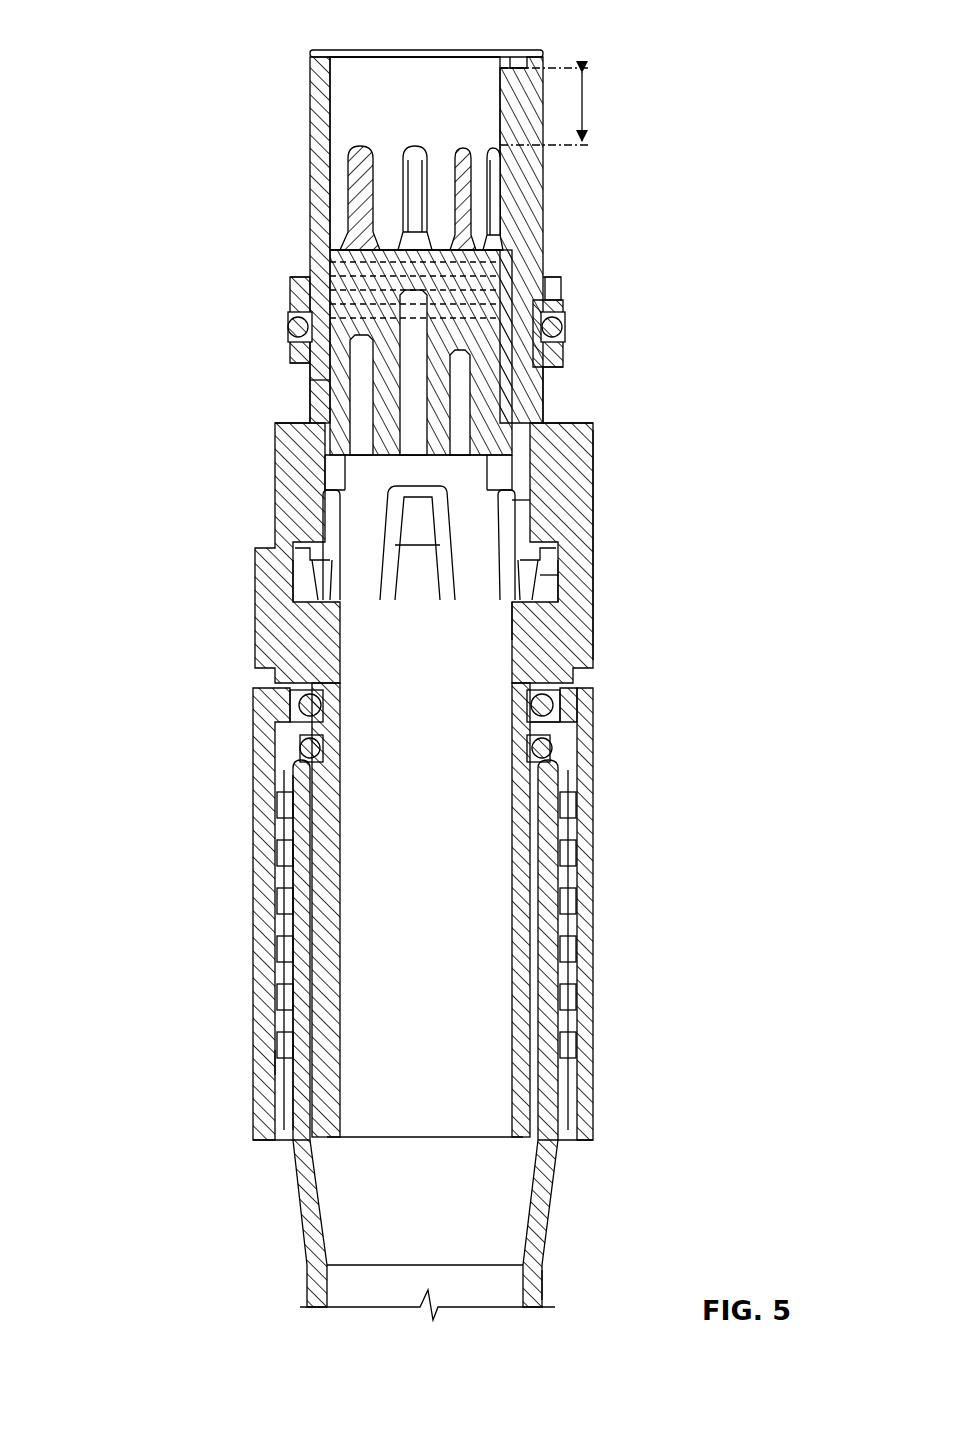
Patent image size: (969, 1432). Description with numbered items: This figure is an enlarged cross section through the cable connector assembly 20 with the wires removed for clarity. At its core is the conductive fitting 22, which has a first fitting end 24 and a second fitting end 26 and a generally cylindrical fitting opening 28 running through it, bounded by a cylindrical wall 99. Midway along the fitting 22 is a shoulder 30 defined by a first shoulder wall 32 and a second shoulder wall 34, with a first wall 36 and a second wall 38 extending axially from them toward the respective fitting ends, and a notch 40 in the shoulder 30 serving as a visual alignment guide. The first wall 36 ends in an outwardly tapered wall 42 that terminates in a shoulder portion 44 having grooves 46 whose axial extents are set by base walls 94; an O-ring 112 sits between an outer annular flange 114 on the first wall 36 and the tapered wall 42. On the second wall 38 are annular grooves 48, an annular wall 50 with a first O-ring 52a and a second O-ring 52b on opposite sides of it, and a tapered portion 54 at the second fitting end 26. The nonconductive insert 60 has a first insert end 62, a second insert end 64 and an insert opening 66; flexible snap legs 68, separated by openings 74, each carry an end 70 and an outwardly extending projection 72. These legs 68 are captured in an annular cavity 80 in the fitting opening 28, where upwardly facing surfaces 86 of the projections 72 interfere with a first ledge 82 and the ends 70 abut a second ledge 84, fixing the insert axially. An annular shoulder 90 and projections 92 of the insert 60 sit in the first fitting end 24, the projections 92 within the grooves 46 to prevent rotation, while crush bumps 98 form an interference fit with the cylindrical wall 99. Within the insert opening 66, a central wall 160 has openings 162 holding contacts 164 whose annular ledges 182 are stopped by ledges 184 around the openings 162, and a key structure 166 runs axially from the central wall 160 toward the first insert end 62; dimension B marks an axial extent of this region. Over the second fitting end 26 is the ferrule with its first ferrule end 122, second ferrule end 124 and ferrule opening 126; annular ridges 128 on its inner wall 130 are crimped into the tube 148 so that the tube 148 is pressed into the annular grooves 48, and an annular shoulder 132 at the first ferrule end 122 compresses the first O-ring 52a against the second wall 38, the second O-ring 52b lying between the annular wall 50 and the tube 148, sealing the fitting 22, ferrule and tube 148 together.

The cable connector assembly 20 is at (113, 38).
The fitting 22 is at (593, 475).
The first fitting end 24 is at (300, 362).
The second fitting end 26 is at (548, 1190).
The fitting opening 28 is at (408, 1077).
The shoulder 30 is at (593, 445).
The first shoulder wall 32 is at (575, 423).
The second shoulder wall 34 is at (318, 692).
The first wall 36 is at (545, 410).
The second wall 38 is at (300, 765).
The notch 40 is at (275, 430).
The outwardly tapered wall 42 is at (290, 327).
The shoulder portion 44 is at (302, 308).
The grooves 46 is at (563, 300).
The annular grooves 48 is at (568, 785).
The annular wall 50 is at (556, 706).
The first O-ring 52a is at (560, 700).
The second O-ring 52b is at (555, 748).
The tapered portion 54 is at (545, 1105).
The insert 60 is at (316, 95).
The first insert end 62 is at (312, 56).
The second insert end 64 is at (330, 497).
The insert opening 66 is at (357, 68).
The snap legs 68 is at (293, 582).
The end 70 is at (320, 602).
The outwardly extending projection 72 is at (305, 556).
The openings 74 is at (497, 557).
The annular cavity 80 is at (560, 590).
The first ledge 82 is at (530, 540).
The second ledge 84 is at (530, 600).
The upwardly facing surfaces 86 is at (330, 520).
The annular shoulder 90 is at (303, 282).
The projections 92 is at (560, 290).
The base walls 94 is at (562, 283).
The crush bumps 98 is at (297, 350).
The cylindrical wall 99 is at (310, 380).
The O-ring 112 is at (562, 327).
The outer annular flange 114 is at (560, 358).
The first ferrule end 122 is at (290, 705).
The second ferrule end 124 is at (262, 1138).
The ferrule opening 126 is at (273, 1062).
The annular ridges 128 is at (283, 795).
The inner wall 130 is at (585, 1080).
The annular shoulder 132 is at (300, 745).
The tube 148 is at (541, 1275).
The central wall 160 is at (400, 207).
The openings 162 is at (530, 240).
The contacts 164 is at (462, 146).
The key structure 166 is at (518, 64).
The annular ledges 182 is at (470, 330).
The ledges 184 is at (505, 262).
The dimension B is at (555, 106).